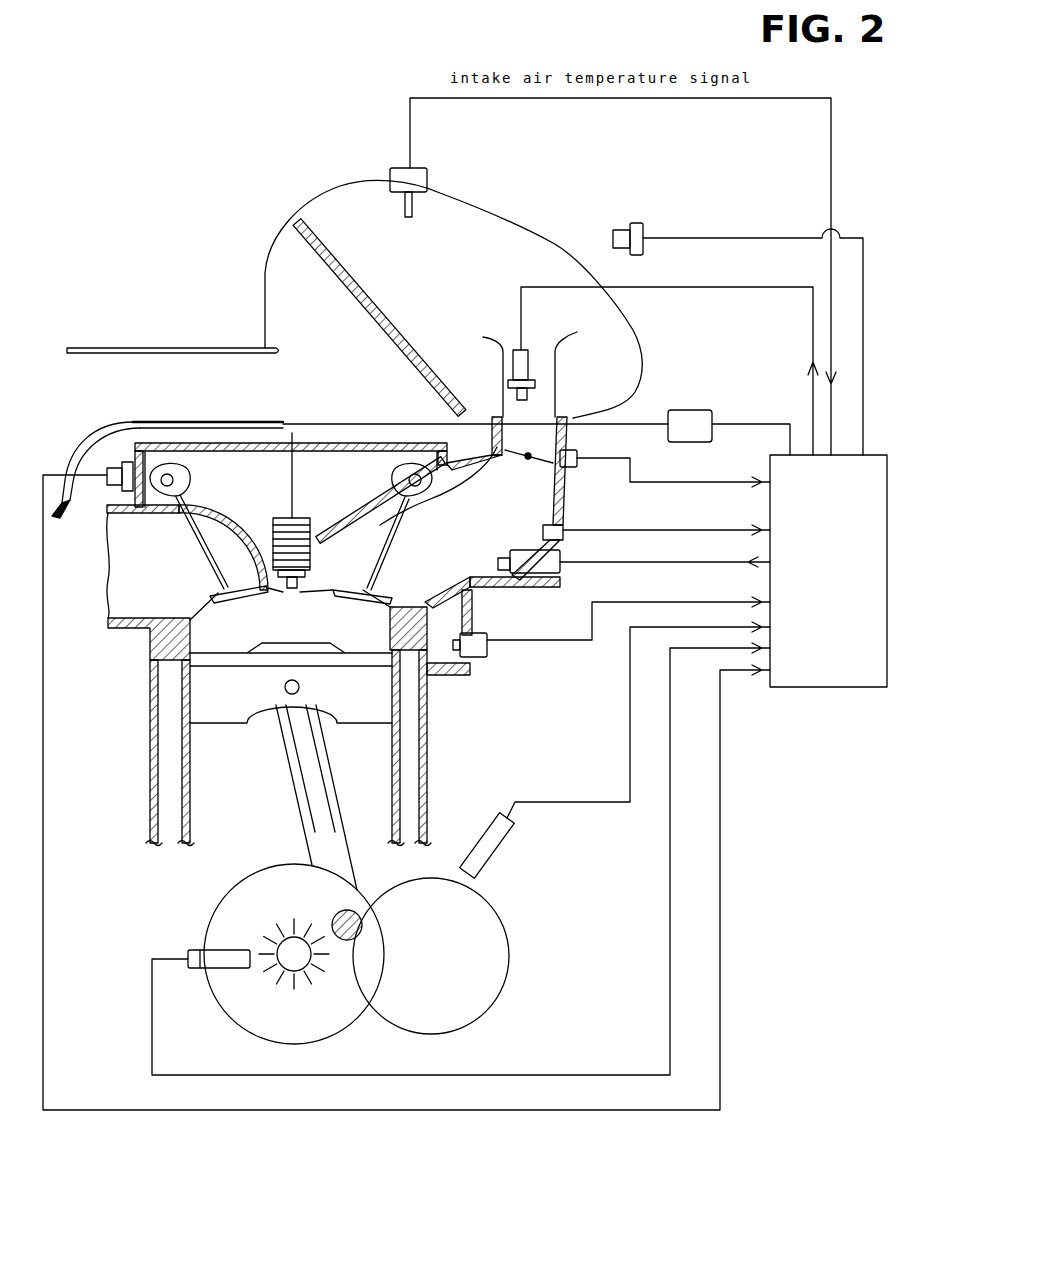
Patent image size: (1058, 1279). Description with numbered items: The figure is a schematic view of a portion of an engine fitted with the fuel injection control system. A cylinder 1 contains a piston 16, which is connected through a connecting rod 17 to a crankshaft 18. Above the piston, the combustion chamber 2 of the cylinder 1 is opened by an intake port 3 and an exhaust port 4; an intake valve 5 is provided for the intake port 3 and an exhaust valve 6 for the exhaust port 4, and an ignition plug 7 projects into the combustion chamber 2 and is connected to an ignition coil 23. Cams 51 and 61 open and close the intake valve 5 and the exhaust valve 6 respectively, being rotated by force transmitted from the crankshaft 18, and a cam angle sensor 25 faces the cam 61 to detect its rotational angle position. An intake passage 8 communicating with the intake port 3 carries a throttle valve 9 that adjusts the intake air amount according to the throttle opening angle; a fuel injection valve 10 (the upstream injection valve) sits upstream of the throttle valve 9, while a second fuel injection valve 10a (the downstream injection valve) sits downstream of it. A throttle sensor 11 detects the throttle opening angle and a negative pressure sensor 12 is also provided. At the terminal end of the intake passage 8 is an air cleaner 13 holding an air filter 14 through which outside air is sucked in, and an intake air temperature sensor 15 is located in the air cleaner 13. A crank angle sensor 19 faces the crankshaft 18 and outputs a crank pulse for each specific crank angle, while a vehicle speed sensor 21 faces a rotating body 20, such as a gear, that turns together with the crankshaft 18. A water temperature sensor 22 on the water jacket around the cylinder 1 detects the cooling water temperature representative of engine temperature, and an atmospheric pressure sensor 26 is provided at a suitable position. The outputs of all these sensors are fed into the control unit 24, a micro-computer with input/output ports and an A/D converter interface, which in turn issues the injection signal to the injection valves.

The cylinder 1 is at (130, 718).
The combustion chamber 2 is at (157, 640).
The intake port 3 is at (462, 608).
The exhaust port 4 is at (177, 622).
The intake valve 5 is at (365, 595).
The exhaust valve 6 is at (220, 597).
The ignition plug 7 is at (304, 516).
The intake passage 8 is at (468, 450).
The throttle valve 9 is at (540, 425).
The fuel injection valve 10 is at (513, 345).
The second fuel injection valve 10a is at (562, 577).
The throttle sensor 11 is at (594, 410).
The negative pressure sensor 12 is at (577, 467).
The air cleaner 13 is at (542, 237).
The air filter 14 is at (355, 282).
The intake air temperature sensor 15 is at (427, 175).
The piston 16 is at (220, 723).
The connecting rod 17 is at (305, 767).
The crankshaft 18 is at (287, 960).
The crank angle sensor 19 is at (192, 950).
The rotating body 20 is at (495, 928).
The vehicle speed sensor 21 is at (493, 865).
The water temperature sensor 22 is at (480, 657).
The ignition coil 23 is at (688, 410).
The control unit 24 is at (820, 688).
The cam angle sensor 25 is at (112, 487).
The atmospheric pressure sensor 26 is at (642, 228).
The cam 51 is at (375, 440).
The cam 61 is at (173, 476).